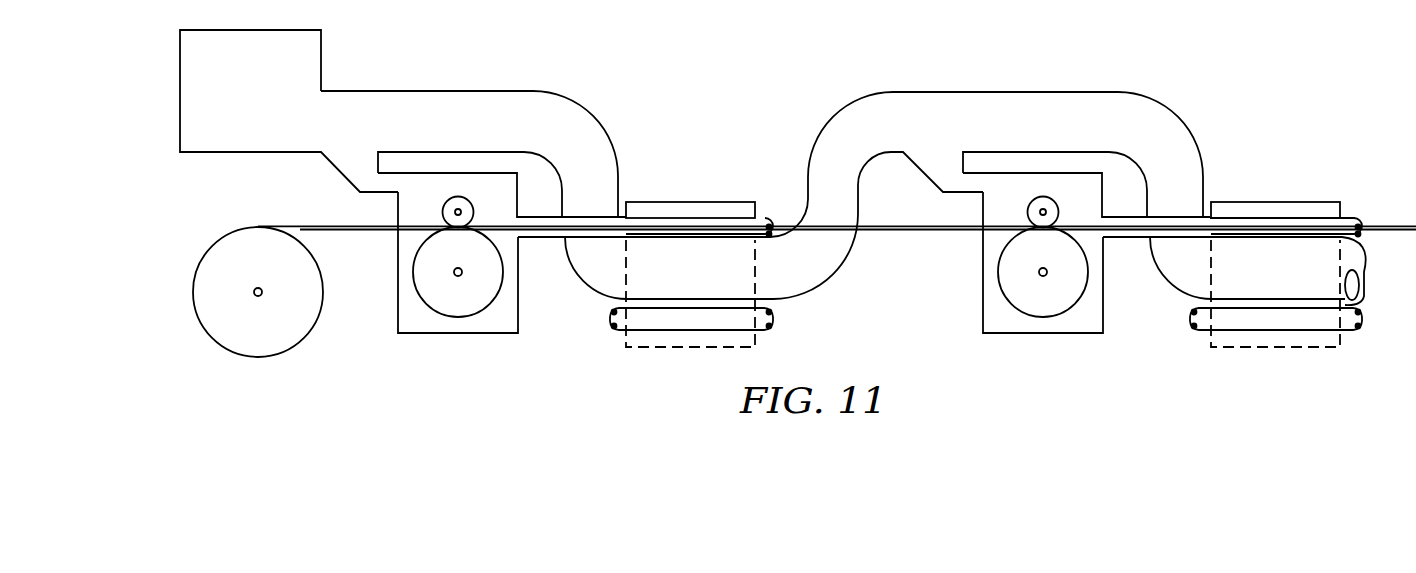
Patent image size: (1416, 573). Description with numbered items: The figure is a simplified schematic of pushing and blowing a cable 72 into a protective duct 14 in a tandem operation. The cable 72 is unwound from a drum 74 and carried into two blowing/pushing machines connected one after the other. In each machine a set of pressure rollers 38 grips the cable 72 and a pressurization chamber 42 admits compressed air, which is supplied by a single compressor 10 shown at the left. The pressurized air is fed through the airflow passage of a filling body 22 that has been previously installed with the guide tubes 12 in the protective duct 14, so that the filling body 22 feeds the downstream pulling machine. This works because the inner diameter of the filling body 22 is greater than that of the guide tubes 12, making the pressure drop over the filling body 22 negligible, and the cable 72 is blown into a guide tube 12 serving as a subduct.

The compressor 10 is at (233, 29).
The guide tube 12 is at (763, 214).
The protective duct 14 is at (679, 202).
The filling body 22 is at (703, 284).
The pressure rollers 38 is at (476, 199).
The pressurization chamber 42 is at (502, 334).
The cable 72 is at (358, 231).
The drum 74 is at (233, 243).